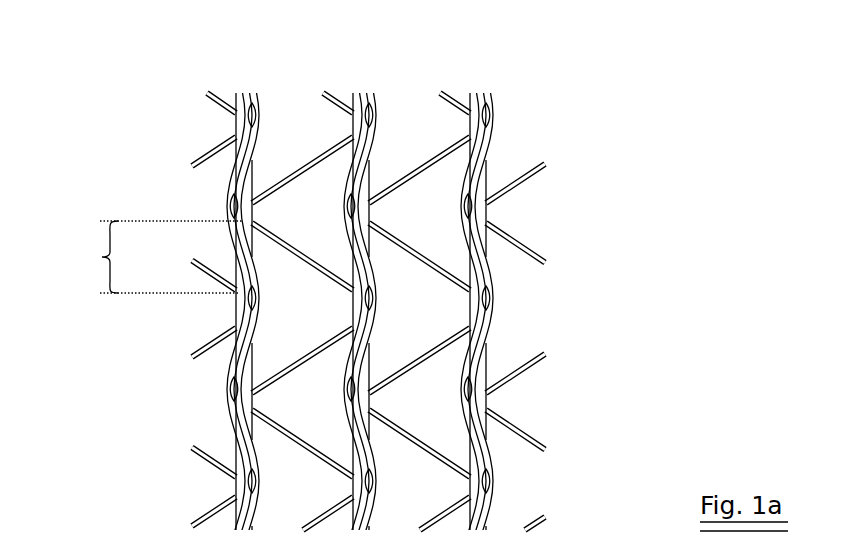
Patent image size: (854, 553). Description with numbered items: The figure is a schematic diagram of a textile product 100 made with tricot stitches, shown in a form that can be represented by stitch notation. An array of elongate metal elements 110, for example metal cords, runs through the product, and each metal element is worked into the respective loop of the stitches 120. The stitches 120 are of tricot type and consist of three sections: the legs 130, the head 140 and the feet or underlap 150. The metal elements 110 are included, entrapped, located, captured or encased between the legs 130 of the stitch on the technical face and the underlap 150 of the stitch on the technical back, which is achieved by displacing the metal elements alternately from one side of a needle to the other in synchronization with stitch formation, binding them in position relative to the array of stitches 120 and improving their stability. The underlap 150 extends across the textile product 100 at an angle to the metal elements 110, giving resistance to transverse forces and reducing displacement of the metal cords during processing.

The textile product 100 is at (401, 286).
The elongate metal elements 110 is at (478, 289).
The stitches 120 is at (525, 434).
The legs 130 is at (145, 257).
The head 140 is at (216, 199).
The underlap 150 is at (303, 270).